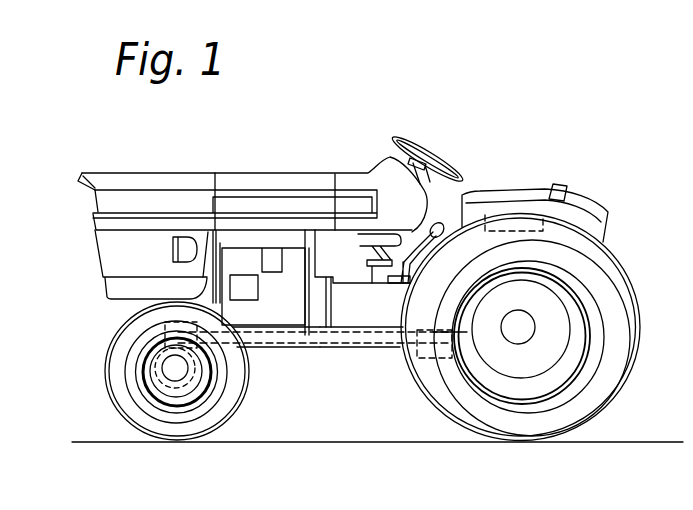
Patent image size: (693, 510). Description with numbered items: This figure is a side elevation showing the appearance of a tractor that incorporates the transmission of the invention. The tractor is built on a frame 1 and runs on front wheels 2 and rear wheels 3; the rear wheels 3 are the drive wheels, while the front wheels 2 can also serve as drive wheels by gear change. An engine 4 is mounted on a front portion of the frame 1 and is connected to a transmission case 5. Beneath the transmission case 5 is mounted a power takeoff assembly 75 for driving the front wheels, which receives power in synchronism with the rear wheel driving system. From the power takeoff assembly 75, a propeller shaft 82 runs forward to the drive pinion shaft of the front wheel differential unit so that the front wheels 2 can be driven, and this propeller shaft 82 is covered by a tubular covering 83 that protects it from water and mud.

The frame 1 is at (298, 173).
The front wheels 2 is at (118, 395).
The rear wheels 3 is at (622, 394).
The engine 4 is at (272, 316).
The transmission case 5 is at (353, 320).
The propeller shaft 82 is at (322, 337).
The tubular covering 83 is at (372, 347).
The power takeoff assembly 75 is at (428, 362).